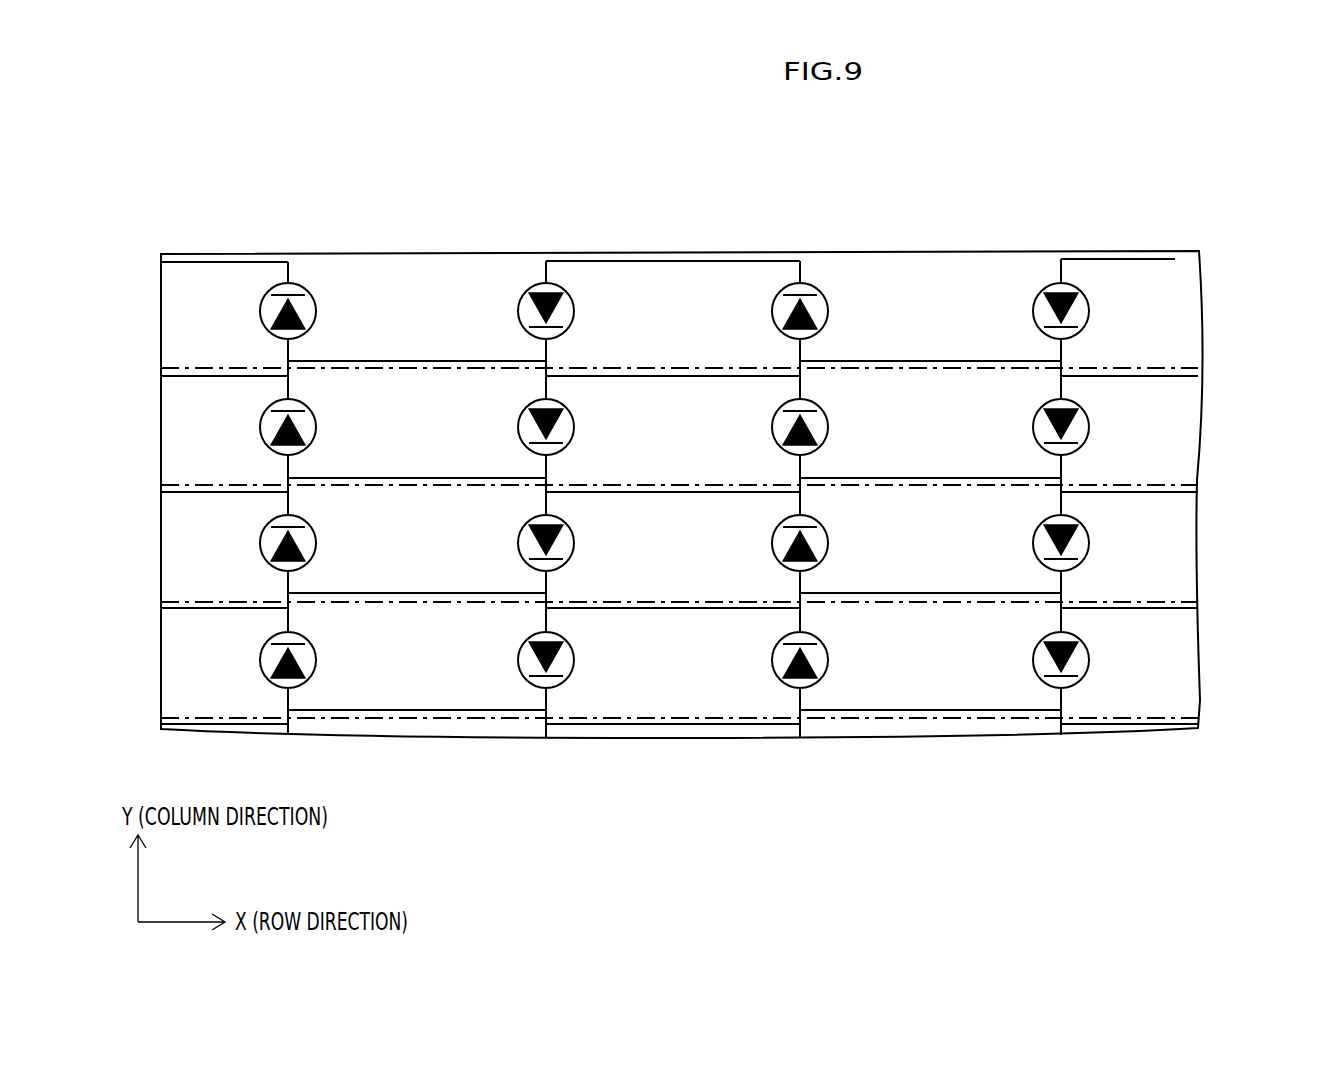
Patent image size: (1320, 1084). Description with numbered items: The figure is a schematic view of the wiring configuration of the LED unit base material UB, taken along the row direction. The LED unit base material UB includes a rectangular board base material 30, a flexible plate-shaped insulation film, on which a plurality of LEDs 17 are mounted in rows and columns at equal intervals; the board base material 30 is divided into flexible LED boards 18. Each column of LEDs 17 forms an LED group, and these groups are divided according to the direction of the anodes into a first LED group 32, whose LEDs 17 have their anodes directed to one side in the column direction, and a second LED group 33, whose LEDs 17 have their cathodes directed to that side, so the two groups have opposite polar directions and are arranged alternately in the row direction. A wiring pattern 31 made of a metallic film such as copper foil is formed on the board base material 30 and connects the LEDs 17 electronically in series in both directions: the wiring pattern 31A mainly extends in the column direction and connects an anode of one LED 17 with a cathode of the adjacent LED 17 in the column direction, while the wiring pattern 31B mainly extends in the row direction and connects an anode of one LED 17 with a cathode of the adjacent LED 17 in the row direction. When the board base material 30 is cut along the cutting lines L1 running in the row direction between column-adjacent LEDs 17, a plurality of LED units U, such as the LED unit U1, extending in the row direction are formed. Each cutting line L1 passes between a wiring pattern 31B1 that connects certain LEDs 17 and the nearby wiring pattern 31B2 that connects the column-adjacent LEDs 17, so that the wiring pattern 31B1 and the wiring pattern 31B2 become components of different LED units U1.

The LED 17 is at (716, 473).
The LED board 18 is at (168, 398).
The board base material 30 is at (1180, 737).
The wiring pattern 31 is at (697, 500).
The wiring pattern 31A is at (288, 468).
The wiring pattern 31B is at (731, 500).
The wiring pattern 31B1 is at (468, 360).
The wiring pattern 31B2 is at (677, 270).
The first LED group 32 is at (307, 320).
The second LED group 33 is at (565, 320).
The cutting line L1 is at (210, 367).
The LED unit U is at (1257, 404).
The LED unit U1 is at (1222, 275).
The LED unit base material UB is at (148, 695).